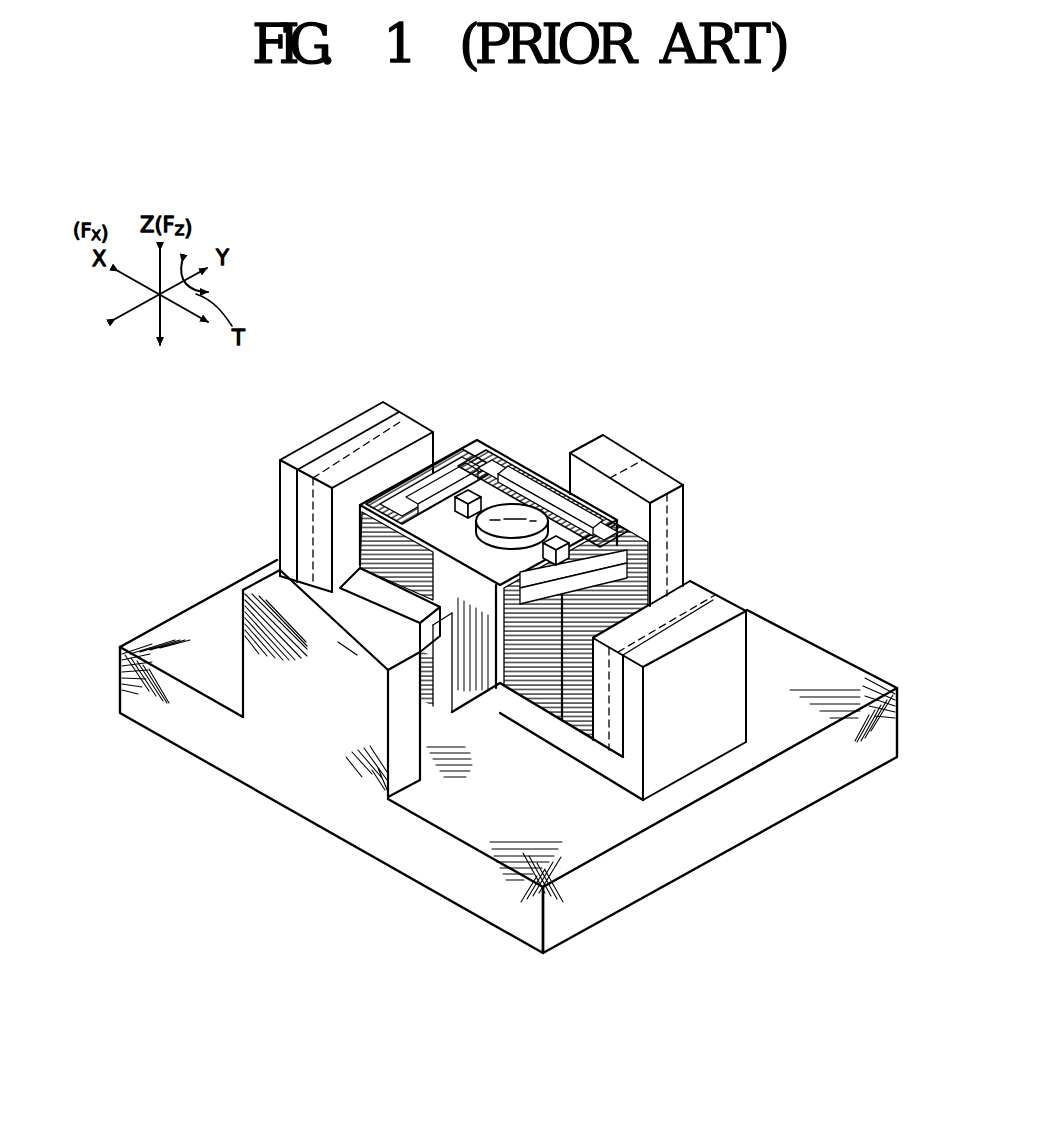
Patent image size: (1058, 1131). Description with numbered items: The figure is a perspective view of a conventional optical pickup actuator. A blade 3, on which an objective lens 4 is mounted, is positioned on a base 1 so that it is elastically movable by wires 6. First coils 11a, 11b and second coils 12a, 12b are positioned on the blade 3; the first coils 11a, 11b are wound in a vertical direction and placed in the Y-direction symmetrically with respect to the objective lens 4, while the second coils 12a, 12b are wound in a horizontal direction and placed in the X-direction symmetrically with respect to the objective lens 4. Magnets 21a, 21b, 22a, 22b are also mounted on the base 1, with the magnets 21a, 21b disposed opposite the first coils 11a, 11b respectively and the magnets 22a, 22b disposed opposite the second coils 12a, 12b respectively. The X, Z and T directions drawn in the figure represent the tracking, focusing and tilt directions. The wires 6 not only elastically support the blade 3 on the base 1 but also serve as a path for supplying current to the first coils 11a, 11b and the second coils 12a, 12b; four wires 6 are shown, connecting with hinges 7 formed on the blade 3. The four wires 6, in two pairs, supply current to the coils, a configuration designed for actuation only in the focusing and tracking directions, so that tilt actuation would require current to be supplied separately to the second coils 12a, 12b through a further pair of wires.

The base 1 is at (700, 850).
The blade 3 is at (513, 483).
The objective lens 4 is at (510, 512).
The wires 6 is at (408, 612).
The hinges 7 is at (480, 502).
The first coil 11a is at (555, 485).
The first coil 11b is at (360, 515).
The second coil 12a is at (453, 447).
The second coil 12b is at (655, 576).
The magnet 21a is at (633, 470).
The magnet 21b is at (358, 575).
The magnet 22a is at (370, 433).
The magnet 22b is at (723, 593).